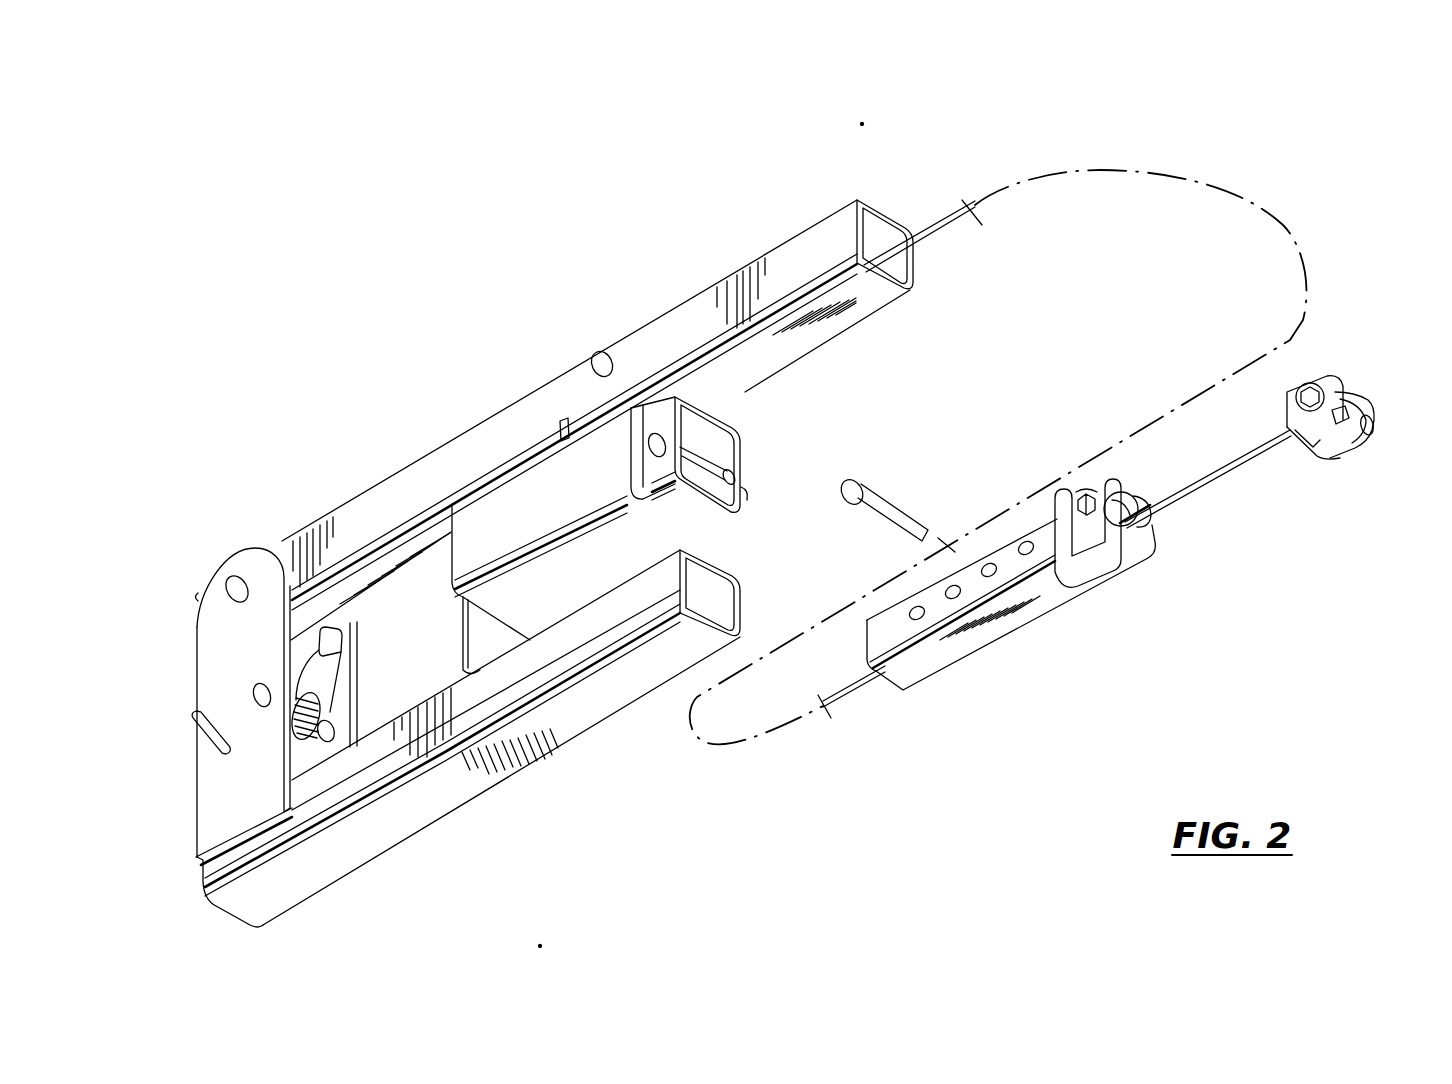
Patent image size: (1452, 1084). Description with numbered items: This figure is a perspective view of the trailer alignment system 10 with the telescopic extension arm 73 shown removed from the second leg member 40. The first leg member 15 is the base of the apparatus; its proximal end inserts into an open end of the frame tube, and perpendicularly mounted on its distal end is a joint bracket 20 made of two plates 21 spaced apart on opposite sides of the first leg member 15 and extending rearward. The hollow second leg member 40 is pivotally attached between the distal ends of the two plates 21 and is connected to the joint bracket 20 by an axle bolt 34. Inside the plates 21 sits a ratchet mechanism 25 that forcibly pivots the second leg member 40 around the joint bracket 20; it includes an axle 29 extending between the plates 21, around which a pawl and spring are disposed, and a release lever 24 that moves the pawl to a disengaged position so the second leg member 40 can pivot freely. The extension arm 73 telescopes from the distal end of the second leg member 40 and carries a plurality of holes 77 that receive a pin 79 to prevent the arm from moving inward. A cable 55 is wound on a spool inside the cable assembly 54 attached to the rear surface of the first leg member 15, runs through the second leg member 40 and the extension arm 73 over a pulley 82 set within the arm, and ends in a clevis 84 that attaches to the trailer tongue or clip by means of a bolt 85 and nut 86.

The system 10 is at (476, 316).
The first leg member 15 is at (568, 722).
The joint bracket 20 is at (227, 556).
The plates 21 is at (208, 615).
The release lever 24 is at (225, 738).
The ratchet mechanism 25 is at (344, 641).
The axle 29 is at (254, 697).
The axle bolt 34 is at (236, 603).
The second leg member 40 is at (457, 468).
The cable assembly 54 is at (697, 445).
The cable 55 is at (930, 238).
The extension arm 73 is at (949, 651).
The holes 77 is at (949, 587).
The pin 79 is at (875, 500).
The pulley 82 is at (1117, 492).
The clevis 84 is at (1351, 452).
The bolt 85 is at (1310, 386).
The nut 86 is at (1375, 430).